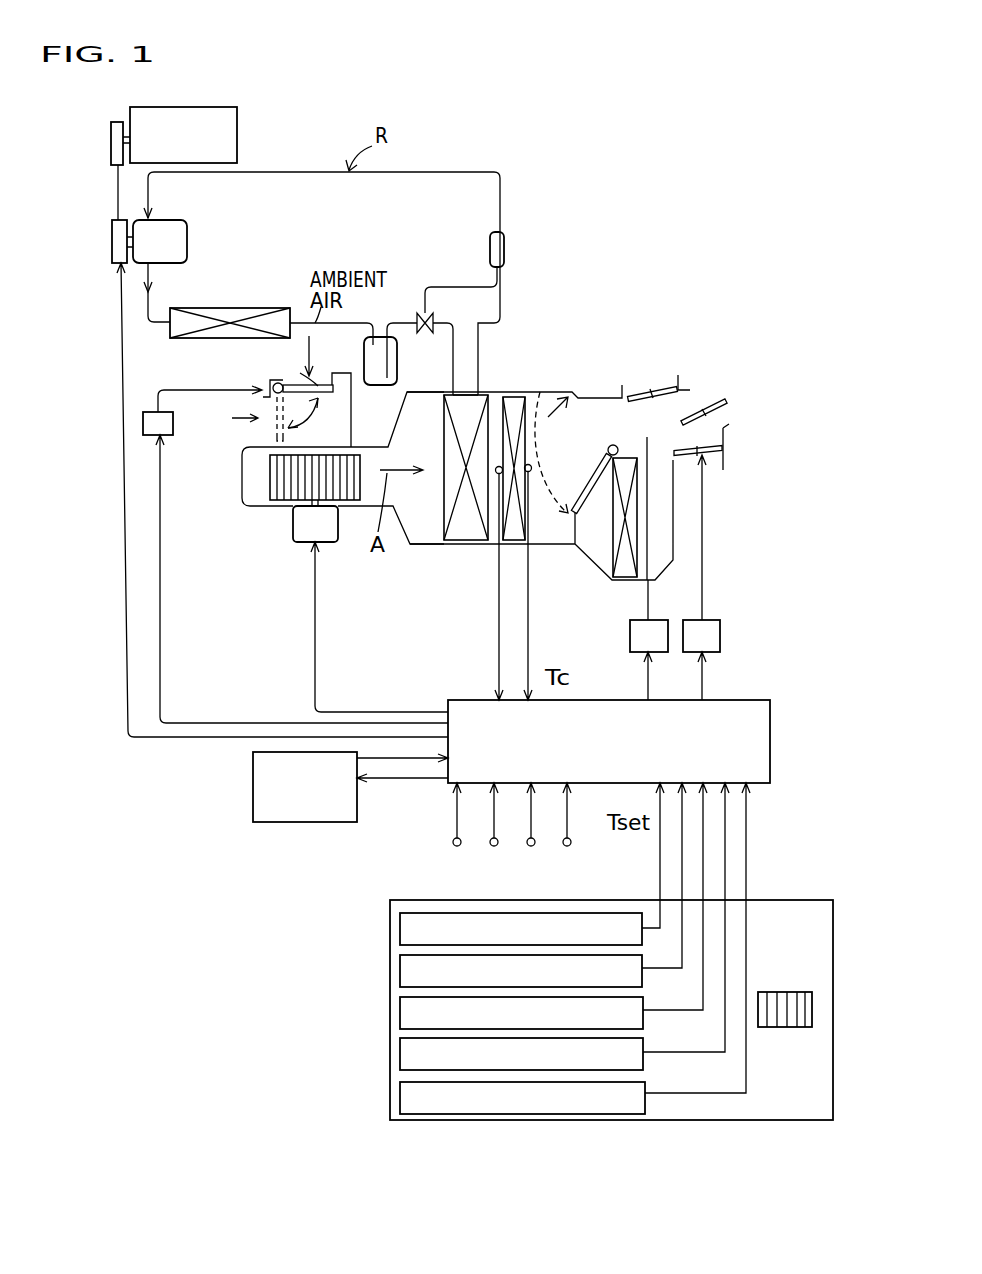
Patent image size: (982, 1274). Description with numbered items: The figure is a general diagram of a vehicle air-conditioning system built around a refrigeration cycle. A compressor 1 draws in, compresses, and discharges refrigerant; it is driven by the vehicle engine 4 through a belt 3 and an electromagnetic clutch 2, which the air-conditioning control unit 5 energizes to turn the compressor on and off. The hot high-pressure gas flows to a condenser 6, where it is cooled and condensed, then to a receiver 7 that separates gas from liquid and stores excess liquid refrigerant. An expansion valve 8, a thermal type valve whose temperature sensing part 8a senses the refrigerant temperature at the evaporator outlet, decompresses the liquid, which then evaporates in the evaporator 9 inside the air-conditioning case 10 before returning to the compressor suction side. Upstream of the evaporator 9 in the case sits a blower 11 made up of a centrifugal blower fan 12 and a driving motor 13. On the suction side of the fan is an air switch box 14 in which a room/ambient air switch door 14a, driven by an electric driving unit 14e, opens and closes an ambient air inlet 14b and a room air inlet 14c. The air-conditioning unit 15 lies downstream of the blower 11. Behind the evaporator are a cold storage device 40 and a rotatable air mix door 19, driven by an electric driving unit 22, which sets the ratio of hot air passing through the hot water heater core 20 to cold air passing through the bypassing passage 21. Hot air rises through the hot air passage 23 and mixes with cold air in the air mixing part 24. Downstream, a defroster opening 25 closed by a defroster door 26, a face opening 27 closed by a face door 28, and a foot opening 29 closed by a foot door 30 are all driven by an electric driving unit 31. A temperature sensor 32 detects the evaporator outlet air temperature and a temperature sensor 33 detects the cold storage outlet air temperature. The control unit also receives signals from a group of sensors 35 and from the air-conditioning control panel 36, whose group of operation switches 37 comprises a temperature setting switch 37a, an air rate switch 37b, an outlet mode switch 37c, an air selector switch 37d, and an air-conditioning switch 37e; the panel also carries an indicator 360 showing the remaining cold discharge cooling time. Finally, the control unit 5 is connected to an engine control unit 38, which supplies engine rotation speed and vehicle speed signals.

The compressor 1 is at (188, 225).
The electromagnetic clutch 2 is at (113, 240).
The belt 3 is at (118, 197).
The vehicle engine 4 is at (238, 137).
The air-conditioning control unit 5 is at (741, 697).
The condenser 6 is at (262, 307).
The receiver 7 is at (398, 355).
The expansion valve 8 is at (420, 313).
The temperature sensing part 8a is at (494, 250).
The evaporator 9 is at (445, 518).
The air-conditioning case 10 is at (488, 392).
The blower 11 is at (226, 474).
The centrifugal blower fan 12 is at (272, 493).
The driving motor 13 is at (293, 542).
The air switch box 14 is at (352, 398).
The room/ambient air switch door 14a is at (278, 383).
The ambient air inlet 14b is at (303, 378).
The room air inlet 14c is at (265, 427).
The electric driving unit 14e is at (156, 411).
The air-conditioning unit 15 is at (562, 378).
The air mix door 19 is at (609, 446).
The hot water heater core 20 is at (612, 565).
The bypassing passage 21 is at (620, 430).
The electric driving unit 22 is at (634, 652).
The hot air passage 23 is at (657, 538).
The air mixing part 24 is at (629, 438).
The defroster opening 25 is at (655, 377).
The defroster door 26 is at (672, 384).
The face opening 27 is at (703, 397).
The face door 28 is at (726, 410).
The foot opening 29 is at (705, 458).
The foot door 30 is at (724, 462).
The electric driving unit 31 is at (721, 638).
The temperature sensor 32 is at (497, 543).
The temperature sensor 33 is at (540, 386).
The group of sensors 35 is at (583, 848).
The air-conditioning control panel 36 is at (415, 889).
The group of operation switches 37 is at (468, 1013).
The temperature setting switch 37a is at (400, 928).
The air rate switch 37b is at (400, 969).
The outlet mode switch 37c is at (400, 1011).
The air selector switch 37d is at (400, 1052).
The air-conditioning switch 37e is at (400, 1094).
The engine control unit 38 is at (305, 822).
The cold storage device 40 is at (511, 543).
The indicator 360 is at (787, 992).